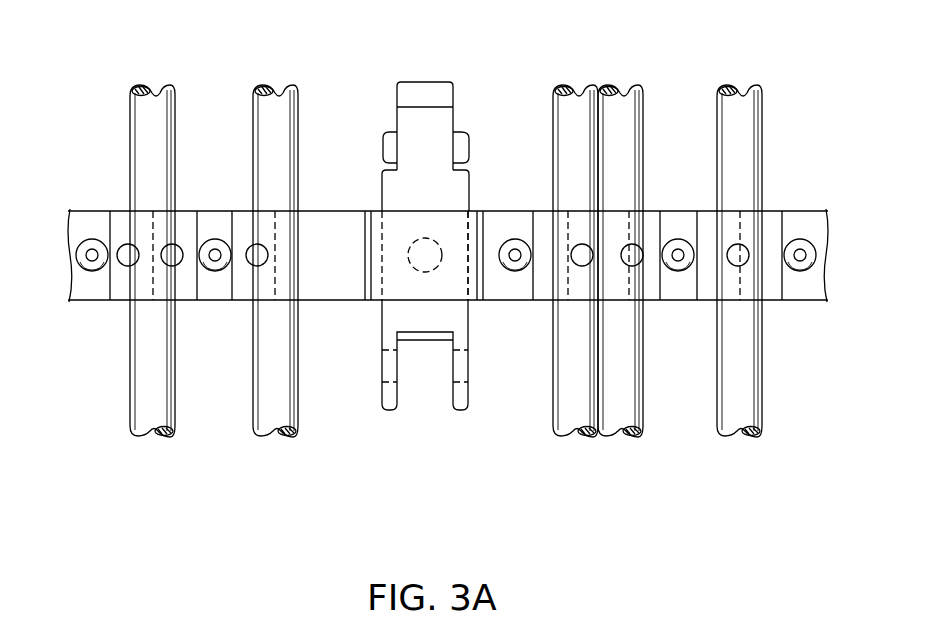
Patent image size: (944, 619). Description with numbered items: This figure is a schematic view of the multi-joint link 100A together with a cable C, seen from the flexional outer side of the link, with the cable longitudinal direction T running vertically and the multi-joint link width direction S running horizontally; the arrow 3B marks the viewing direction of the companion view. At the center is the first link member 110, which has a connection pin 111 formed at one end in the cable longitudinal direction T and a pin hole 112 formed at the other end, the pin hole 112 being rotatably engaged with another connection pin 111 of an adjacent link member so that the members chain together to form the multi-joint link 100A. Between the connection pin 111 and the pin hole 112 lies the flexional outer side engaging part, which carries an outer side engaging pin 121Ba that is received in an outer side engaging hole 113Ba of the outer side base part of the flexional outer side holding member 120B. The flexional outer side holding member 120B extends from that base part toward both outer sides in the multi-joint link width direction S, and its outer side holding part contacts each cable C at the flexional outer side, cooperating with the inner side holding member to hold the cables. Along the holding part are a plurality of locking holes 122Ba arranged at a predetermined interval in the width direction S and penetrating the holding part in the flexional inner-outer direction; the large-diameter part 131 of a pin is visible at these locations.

The multi-joint link 100A is at (421, 211).
The first link member 110 is at (446, 79).
The connection pin 111 is at (463, 139).
The pin hole 112 is at (470, 378).
The outer side engaging hole 113Ba is at (445, 250).
The flexional outer side holding member 120B is at (245, 207).
The outer side engaging pin 121Ba is at (412, 240).
The locking holes 122Ba is at (641, 258).
The large-diameter part 131 is at (679, 273).
The cable C is at (129, 139).
The arrow 3B is at (425, 449).
The cable longitudinal direction T is at (798, 380).
The multi-joint link width direction S is at (781, 496).